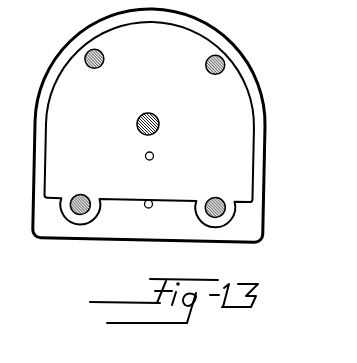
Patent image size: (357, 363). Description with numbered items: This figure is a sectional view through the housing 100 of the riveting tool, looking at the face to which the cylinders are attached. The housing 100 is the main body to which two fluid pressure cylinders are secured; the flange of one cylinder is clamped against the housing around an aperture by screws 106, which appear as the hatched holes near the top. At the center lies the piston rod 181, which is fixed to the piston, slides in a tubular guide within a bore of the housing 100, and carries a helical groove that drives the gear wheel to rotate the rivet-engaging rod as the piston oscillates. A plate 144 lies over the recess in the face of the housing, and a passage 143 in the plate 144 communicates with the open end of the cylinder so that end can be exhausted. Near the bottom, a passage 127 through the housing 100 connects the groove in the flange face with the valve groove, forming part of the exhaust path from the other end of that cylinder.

The housing 100 is at (221, 40).
The screws 106 is at (223, 62).
The piston rod 181 is at (159, 124).
The plate 144 is at (246, 131).
The passage 143 is at (154, 155).
The passage 127 is at (148, 208).